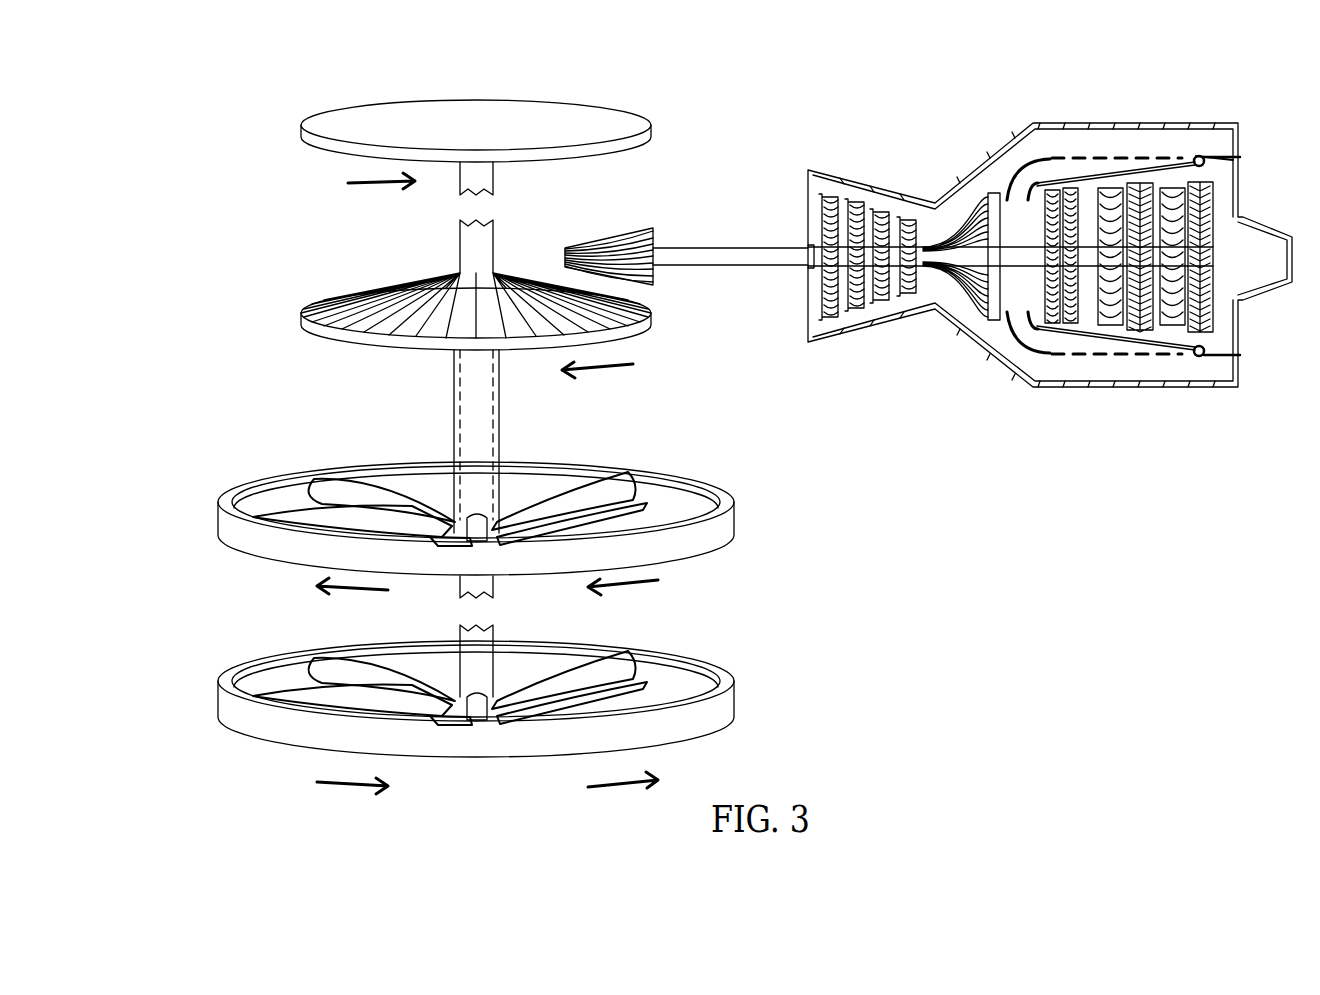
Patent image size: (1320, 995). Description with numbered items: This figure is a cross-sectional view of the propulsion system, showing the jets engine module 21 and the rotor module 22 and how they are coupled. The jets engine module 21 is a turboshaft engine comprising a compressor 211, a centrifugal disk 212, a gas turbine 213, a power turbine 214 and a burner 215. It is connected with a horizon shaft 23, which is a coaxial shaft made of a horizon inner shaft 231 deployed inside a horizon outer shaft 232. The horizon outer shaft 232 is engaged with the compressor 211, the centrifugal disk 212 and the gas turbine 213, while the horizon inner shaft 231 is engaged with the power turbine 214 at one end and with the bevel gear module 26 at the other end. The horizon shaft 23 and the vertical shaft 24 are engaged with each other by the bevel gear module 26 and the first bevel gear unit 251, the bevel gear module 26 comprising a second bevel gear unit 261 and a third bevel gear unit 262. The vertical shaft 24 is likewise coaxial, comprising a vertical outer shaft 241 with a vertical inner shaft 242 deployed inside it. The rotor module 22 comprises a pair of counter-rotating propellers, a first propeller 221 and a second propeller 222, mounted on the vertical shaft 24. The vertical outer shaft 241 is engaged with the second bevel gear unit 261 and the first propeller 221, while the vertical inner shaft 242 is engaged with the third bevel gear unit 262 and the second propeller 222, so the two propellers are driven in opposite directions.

The jets engine module 21 is at (1022, 251).
The compressor 211 is at (857, 307).
The centrifugal disk 212 is at (966, 320).
The gas turbine 213 is at (1048, 330).
The power turbine 214 is at (1200, 355).
The burner 215 is at (1133, 160).
The rotor module 22 is at (571, 609).
The first propeller 221 is at (727, 533).
The second propeller 222 is at (539, 699).
The horizon shaft 23 is at (733, 202).
The horizon inner shaft 231 is at (722, 256).
The horizon outer shaft 232 is at (784, 230).
The vertical shaft 24 is at (390, 441).
The vertical outer shaft 241 is at (455, 378).
The vertical inner shaft 242 is at (460, 430).
The first bevel gear unit 251 is at (640, 237).
The bevel gear module 26 is at (220, 85).
The second bevel gear unit 261 is at (335, 305).
The third bevel gear unit 262 is at (337, 122).